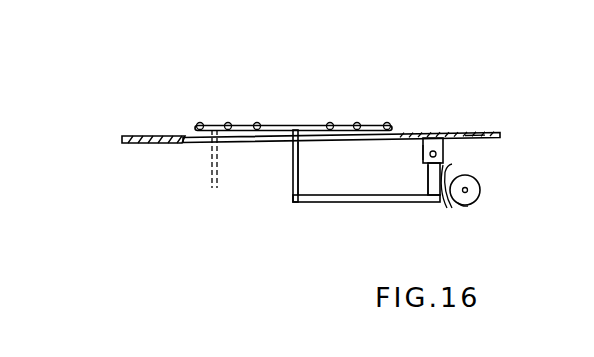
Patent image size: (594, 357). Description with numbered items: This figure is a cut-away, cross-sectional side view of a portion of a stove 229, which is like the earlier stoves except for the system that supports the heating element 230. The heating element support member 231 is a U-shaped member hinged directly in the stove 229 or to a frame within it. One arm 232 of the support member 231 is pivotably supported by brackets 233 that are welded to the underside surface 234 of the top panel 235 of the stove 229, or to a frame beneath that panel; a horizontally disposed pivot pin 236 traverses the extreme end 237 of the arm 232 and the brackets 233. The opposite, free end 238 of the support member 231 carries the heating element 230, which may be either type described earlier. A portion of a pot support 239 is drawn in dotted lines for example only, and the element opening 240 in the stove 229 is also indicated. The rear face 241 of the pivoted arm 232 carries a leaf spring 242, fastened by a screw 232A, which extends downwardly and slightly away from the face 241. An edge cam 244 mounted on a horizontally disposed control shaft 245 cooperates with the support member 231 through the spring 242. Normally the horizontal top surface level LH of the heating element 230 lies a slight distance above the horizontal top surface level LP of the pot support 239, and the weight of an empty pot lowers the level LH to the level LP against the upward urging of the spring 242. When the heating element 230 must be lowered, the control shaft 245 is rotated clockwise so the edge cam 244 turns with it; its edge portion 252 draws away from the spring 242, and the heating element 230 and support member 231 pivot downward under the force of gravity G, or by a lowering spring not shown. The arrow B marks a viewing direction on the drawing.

The stove 229 is at (479, 99).
The heating element 230 is at (357, 122).
The heating element support member 231 is at (350, 203).
The arm 232 is at (428, 181).
The screw 232A is at (446, 170).
The brackets 233 is at (422, 151).
The underside surface 234 is at (485, 138).
The top panel 235 is at (473, 133).
The pivot pin 236 is at (433, 151).
The extreme end 237 is at (427, 172).
The free end 238 is at (292, 166).
The pot support 239 is at (205, 172).
The element opening 240 is at (187, 143).
The rear face 241 is at (442, 204).
The leaf spring 242 is at (449, 209).
The edge cam 244 is at (477, 196).
The control shaft 245 is at (468, 190).
The edge portion 252 is at (468, 206).
The horizontal top surface level of the pot support LP is at (168, 128).
The horizontal top surface level of the heating element LH is at (175, 125).
The direction B is at (296, 93).
The gravity G is at (297, 291).